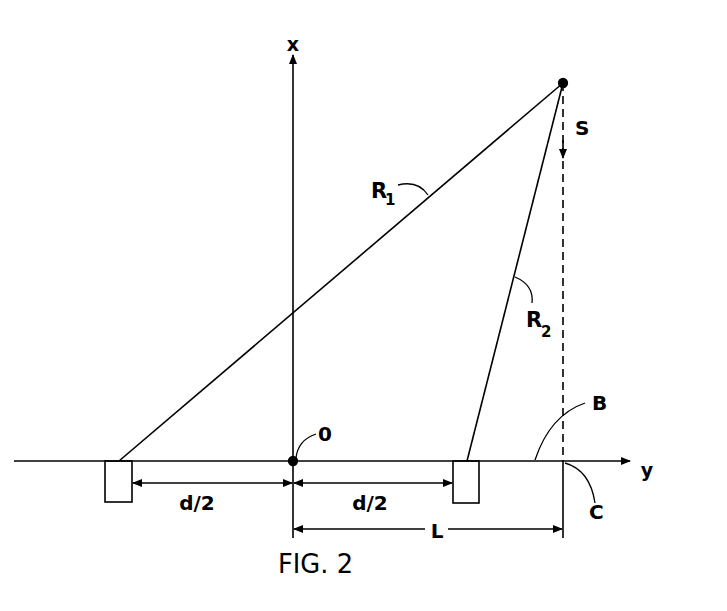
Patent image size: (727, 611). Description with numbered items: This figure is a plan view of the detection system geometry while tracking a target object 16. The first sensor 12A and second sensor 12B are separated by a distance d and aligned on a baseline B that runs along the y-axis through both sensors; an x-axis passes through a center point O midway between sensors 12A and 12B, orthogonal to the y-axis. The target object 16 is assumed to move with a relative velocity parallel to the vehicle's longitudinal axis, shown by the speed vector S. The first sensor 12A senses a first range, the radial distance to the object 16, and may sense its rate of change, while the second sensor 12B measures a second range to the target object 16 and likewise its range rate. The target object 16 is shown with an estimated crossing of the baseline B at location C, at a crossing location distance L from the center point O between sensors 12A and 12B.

The first sensor 12A is at (115, 493).
The second sensor 12B is at (472, 484).
The target object 16 is at (568, 80).